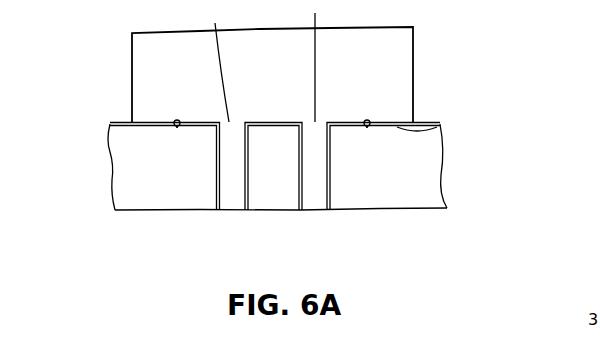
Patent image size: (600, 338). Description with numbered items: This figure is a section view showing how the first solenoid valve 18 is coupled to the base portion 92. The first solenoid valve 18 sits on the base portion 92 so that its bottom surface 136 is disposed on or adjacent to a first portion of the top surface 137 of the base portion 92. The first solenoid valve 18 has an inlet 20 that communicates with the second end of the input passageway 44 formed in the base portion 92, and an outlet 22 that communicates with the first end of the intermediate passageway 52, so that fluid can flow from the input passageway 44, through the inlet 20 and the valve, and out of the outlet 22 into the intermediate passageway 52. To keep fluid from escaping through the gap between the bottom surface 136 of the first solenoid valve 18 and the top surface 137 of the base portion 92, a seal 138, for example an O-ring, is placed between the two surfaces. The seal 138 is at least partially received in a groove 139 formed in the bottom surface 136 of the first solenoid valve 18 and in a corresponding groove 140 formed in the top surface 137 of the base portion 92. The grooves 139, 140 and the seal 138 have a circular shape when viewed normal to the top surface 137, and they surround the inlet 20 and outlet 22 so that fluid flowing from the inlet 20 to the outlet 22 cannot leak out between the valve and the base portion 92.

The first solenoid valve 18 is at (415, 33).
The inlet 20 is at (215, 63).
The outlet 22 is at (319, 61).
The input passageway 44 is at (233, 197).
The intermediate passageway 52 is at (313, 197).
The base portion 92 is at (402, 198).
The bottom surface 136 is at (438, 123).
The top surface 137 is at (127, 122).
The seal 138 is at (177, 125).
The groove 139 is at (177, 120).
The groove 140 is at (177, 126).